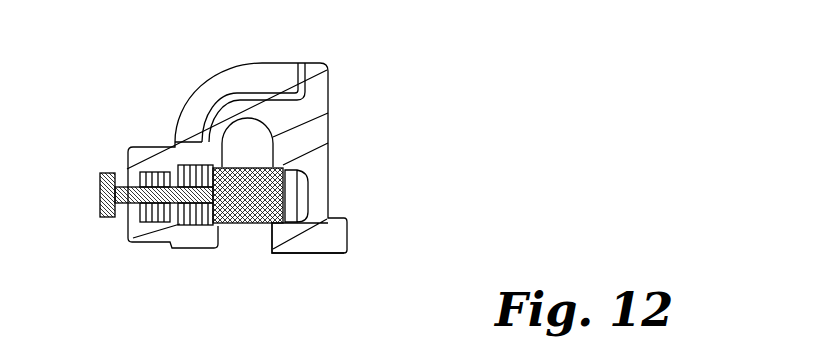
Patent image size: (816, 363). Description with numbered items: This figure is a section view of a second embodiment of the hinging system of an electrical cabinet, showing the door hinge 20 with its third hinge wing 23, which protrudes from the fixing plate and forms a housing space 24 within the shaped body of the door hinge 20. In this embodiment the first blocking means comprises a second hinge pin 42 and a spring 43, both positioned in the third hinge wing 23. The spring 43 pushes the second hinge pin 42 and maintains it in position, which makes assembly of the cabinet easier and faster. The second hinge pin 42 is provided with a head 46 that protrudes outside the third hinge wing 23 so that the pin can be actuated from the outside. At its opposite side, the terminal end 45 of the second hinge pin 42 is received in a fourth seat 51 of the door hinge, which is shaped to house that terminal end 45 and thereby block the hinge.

The door hinge 20 is at (265, 161).
The third hinge wing 23 is at (188, 246).
The housing space 24 is at (242, 140).
The second hinge pin 42 is at (254, 226).
The spring 43 is at (153, 222).
The terminal end of the second hinge pin 45 is at (289, 237).
The head 46 is at (108, 170).
The fourth seat 51 is at (302, 198).